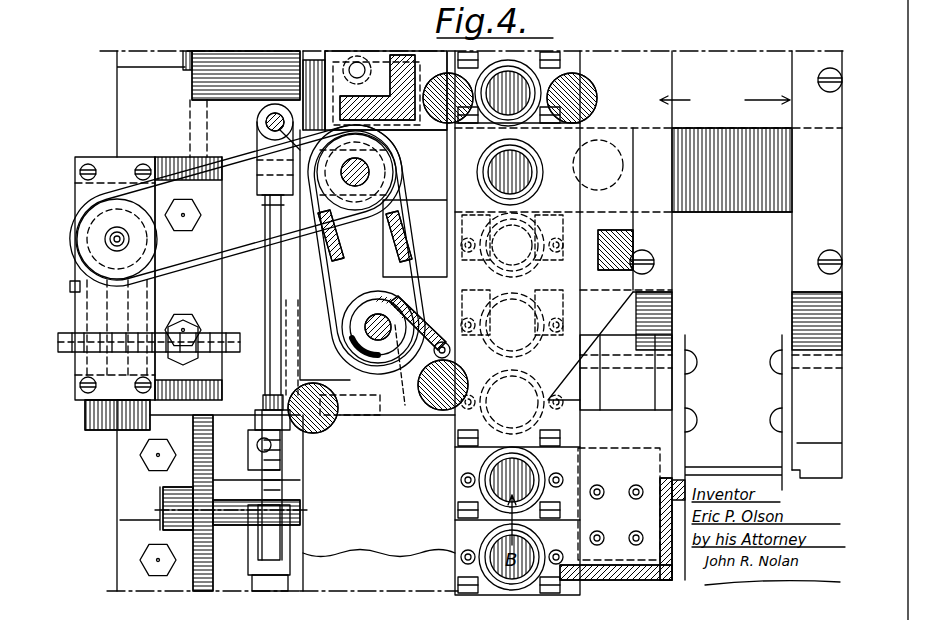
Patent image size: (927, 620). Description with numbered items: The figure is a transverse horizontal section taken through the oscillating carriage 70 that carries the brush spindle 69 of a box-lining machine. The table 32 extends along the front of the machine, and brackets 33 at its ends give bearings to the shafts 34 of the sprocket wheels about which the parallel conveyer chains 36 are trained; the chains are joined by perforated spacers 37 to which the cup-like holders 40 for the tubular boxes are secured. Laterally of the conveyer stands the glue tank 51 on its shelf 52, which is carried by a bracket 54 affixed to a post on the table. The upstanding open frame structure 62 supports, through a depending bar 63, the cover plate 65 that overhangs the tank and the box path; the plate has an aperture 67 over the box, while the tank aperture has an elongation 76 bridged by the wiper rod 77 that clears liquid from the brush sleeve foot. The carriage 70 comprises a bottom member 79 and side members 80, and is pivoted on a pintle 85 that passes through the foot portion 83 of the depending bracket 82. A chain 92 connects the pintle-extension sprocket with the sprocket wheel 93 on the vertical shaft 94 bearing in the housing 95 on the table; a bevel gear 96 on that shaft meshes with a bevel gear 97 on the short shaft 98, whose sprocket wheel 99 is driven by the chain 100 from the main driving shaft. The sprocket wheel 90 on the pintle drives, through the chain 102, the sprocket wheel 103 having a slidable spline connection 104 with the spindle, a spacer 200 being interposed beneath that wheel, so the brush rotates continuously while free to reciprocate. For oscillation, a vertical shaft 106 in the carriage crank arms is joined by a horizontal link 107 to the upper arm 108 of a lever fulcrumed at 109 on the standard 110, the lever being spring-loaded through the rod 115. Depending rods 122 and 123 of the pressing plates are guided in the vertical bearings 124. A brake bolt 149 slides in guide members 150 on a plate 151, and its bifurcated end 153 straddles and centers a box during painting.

The table 32 is at (130, 90).
The brackets 33 is at (230, 98).
The shafts 34 is at (183, 58).
The chains 36 is at (553, 55).
The spacers 37 is at (552, 72).
The holders 40 is at (578, 406).
The tank 51 is at (316, 30).
The shelf 52 is at (373, 491).
The bracket 54 is at (322, 420).
The frame structure 62 is at (788, 4).
The bar 63 is at (640, 233).
The plate 65 is at (636, 147).
The aperture 67 is at (598, 140).
The spindle 69 is at (375, 342).
The carriage 70 is at (405, 200).
The elongation 76 is at (450, 355).
The wiper rod 77 is at (440, 322).
The bottom member 79 is at (344, 248).
The side members 80 is at (440, 232).
The bracket 82 is at (345, 92).
The foot portion 83 is at (430, 258).
The pintle 85 is at (366, 162).
The sprocket wheel 90 is at (400, 160).
The chain 92 is at (181, 170).
The sprocket wheel 93 is at (158, 240).
The vertical shaft 94 is at (110, 236).
The housing 95 is at (145, 162).
The bevel gear 96 is at (296, 319).
The bevel gear 97 is at (76, 286).
The short shaft 98 is at (115, 157).
The sprocket wheel 99 is at (100, 380).
The chain 100 is at (88, 335).
The chain 102 is at (266, 274).
The sprocket wheel 103 is at (400, 415).
The spline connection 104 is at (420, 322).
The vertical shaft 106 is at (275, 105).
The link 107 is at (268, 300).
The upper arm 108 is at (252, 438).
The fulcrum 109 is at (160, 508).
The standard 110 is at (128, 535).
The rod 115 is at (252, 2).
The rods 122 is at (318, 435).
The rods 123 is at (442, 88).
The bearings 124 is at (455, 85).
The bolt 149 is at (732, 170).
The guide members 150 is at (726, 315).
The plate 151 is at (725, 465).
The bifurcation 153 is at (615, 194).
The spacer 200 is at (268, 320).